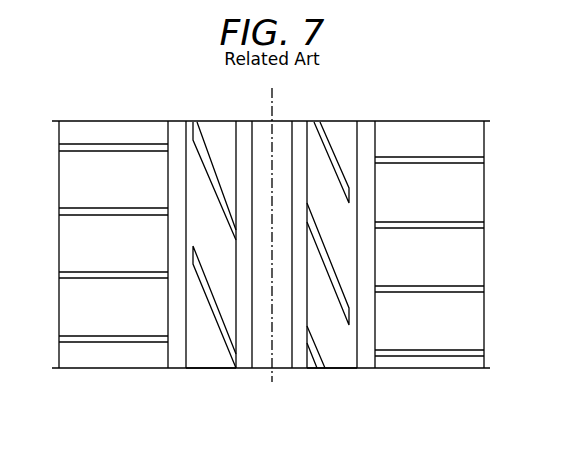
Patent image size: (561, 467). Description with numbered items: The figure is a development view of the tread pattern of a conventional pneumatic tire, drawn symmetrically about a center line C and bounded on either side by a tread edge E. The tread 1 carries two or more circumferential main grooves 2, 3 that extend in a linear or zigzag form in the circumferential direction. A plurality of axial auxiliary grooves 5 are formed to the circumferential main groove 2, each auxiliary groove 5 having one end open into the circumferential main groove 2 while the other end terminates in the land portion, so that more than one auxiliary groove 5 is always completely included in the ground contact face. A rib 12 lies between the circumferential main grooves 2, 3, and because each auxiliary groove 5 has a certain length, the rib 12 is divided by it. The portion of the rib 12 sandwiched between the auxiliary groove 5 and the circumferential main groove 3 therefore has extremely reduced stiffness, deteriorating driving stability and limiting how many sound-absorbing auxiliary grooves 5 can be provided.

The tread 1 is at (277, 376).
The circumferential main groove 2 is at (243, 128).
The circumferential main groove 3 is at (176, 128).
The axial auxiliary groove 5 is at (212, 176).
The rib 12 is at (207, 354).
The tire equator center line C is at (271, 225).
The tread edge E is at (59, 226).